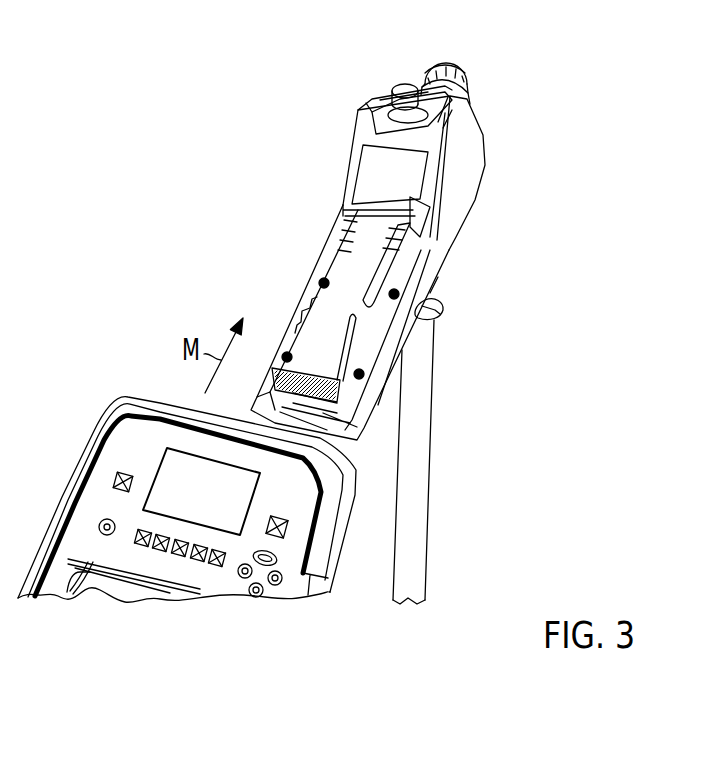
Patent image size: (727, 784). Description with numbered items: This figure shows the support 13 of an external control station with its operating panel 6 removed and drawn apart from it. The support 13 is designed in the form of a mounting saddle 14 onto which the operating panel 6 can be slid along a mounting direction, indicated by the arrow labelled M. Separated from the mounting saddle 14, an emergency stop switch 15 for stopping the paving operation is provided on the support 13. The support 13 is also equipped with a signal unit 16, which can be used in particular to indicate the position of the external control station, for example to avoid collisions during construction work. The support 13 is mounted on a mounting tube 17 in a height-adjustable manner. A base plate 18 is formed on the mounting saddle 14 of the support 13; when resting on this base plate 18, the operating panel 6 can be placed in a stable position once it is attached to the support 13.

The operating panel 6 is at (155, 398).
The support 13 is at (484, 162).
The mounting saddle 14 is at (446, 251).
The emergency stop switch 15 is at (397, 89).
The signal unit 16 is at (467, 77).
The mounting tube 17 is at (420, 437).
The base plate 18 is at (347, 273).